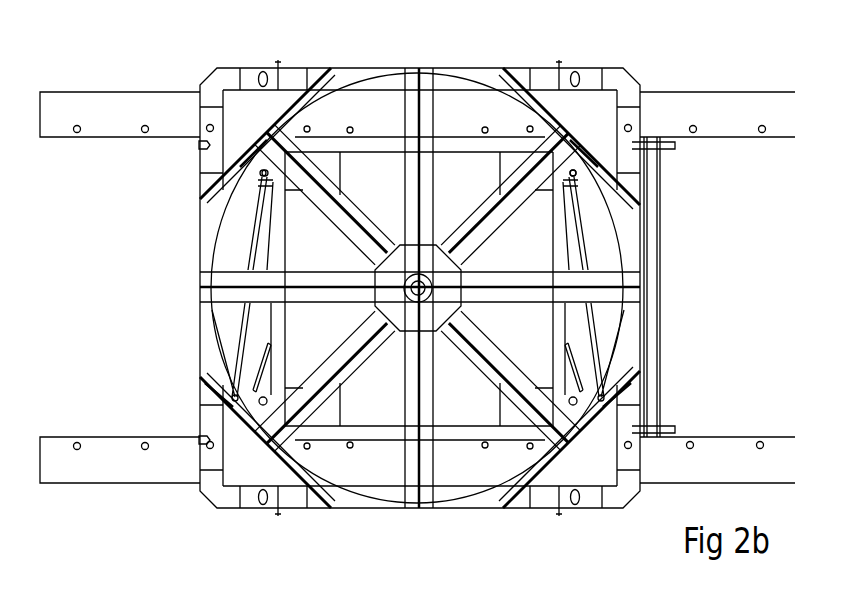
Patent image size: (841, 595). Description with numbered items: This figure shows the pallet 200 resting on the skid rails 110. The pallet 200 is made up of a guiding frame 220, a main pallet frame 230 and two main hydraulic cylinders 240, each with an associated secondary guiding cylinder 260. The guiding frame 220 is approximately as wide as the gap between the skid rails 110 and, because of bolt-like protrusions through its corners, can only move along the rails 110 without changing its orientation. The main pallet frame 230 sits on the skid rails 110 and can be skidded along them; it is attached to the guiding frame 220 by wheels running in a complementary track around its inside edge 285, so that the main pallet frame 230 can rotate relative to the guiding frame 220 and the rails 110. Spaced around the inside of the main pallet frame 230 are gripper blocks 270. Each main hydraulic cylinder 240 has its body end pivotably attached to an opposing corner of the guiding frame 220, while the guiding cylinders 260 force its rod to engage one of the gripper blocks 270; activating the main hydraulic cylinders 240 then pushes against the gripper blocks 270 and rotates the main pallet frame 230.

The skid rails 110 is at (718, 100).
The pallet 200 is at (532, 538).
The guiding frame 220 is at (383, 142).
The main pallet frame 230 is at (596, 112).
The main hydraulic cylinders 240 is at (252, 224).
The guiding cylinders 260 is at (262, 350).
The gripper blocks 270 is at (663, 160).
The inside edge 285 is at (520, 104).